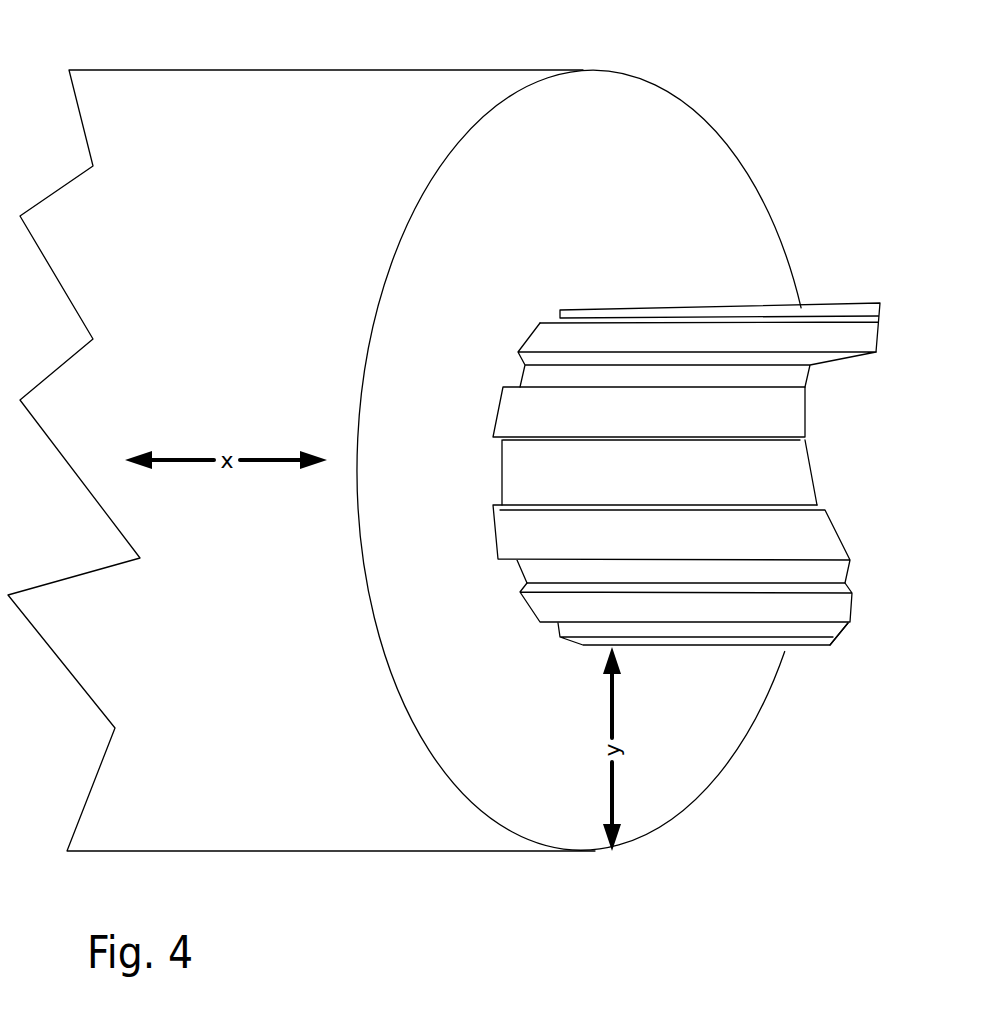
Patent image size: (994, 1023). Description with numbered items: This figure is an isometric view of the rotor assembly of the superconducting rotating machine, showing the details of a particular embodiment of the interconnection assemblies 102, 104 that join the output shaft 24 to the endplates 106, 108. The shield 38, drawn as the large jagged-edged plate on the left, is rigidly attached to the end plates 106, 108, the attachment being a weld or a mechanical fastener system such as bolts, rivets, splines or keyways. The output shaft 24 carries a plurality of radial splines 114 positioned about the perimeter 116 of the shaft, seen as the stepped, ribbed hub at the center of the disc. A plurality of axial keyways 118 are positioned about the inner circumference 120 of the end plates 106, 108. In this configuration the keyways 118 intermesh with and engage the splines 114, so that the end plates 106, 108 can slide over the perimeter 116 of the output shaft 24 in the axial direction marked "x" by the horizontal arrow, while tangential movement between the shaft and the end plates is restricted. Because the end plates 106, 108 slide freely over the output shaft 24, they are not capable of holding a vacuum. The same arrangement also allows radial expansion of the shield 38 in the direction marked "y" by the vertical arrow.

The shield 38 is at (284, 816).
The endplate 106 is at (577, 432).
The endplate 108 is at (537, 130).
The interconnection assembly 102 is at (710, 180).
The interconnection assembly 104 is at (598, 290).
The radial spline 114 is at (623, 417).
The axial keyway 118 is at (492, 538).
The output shaft 24 is at (747, 605).
The inner circumference 120 is at (578, 665).
The perimeter 116 is at (820, 648).